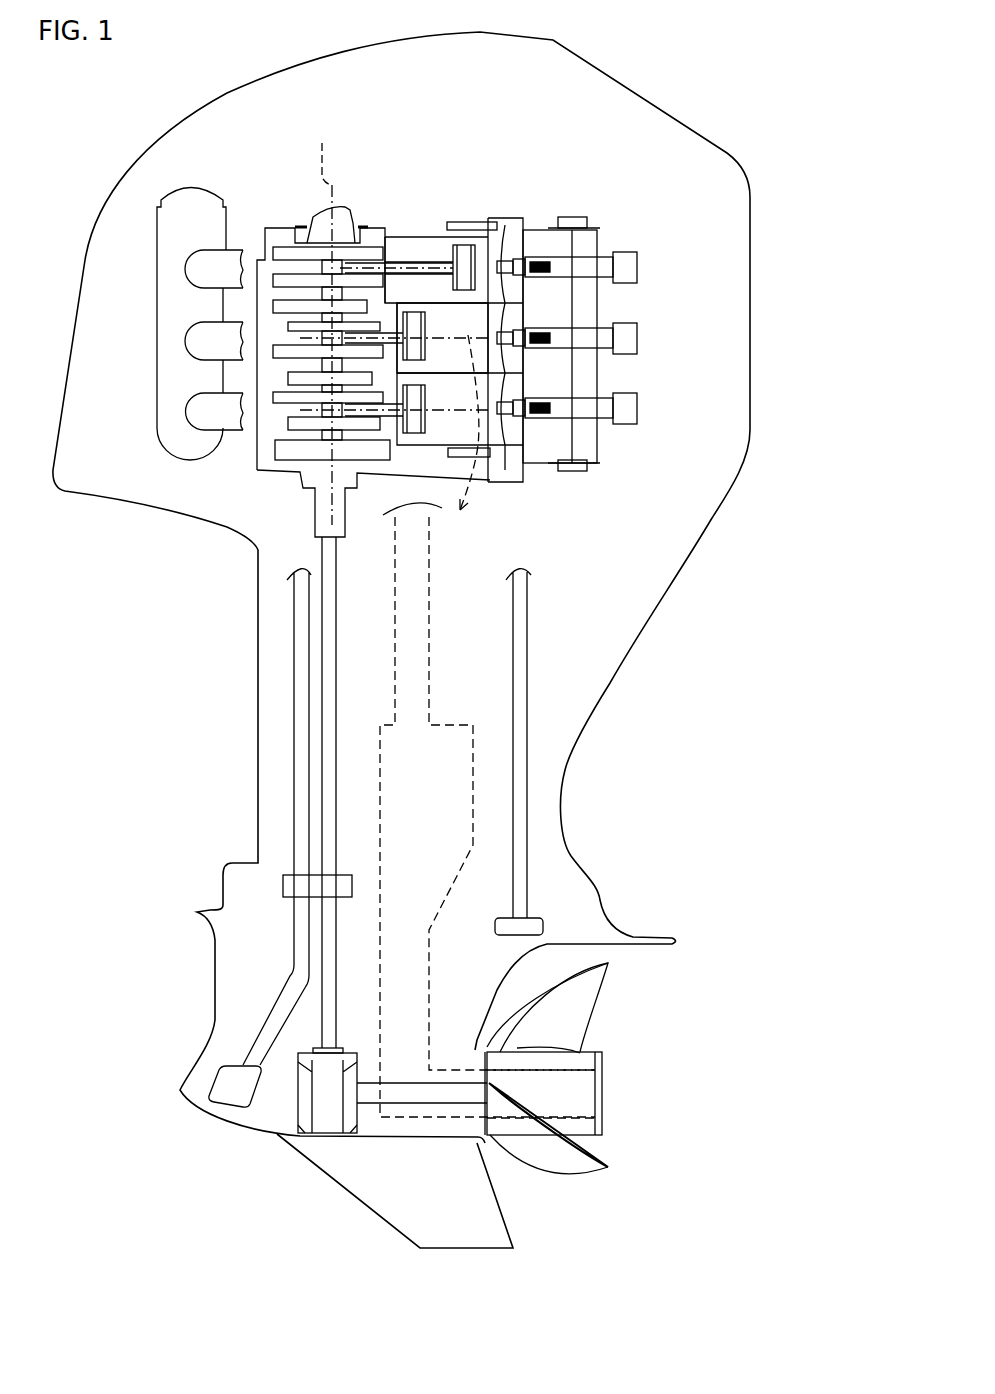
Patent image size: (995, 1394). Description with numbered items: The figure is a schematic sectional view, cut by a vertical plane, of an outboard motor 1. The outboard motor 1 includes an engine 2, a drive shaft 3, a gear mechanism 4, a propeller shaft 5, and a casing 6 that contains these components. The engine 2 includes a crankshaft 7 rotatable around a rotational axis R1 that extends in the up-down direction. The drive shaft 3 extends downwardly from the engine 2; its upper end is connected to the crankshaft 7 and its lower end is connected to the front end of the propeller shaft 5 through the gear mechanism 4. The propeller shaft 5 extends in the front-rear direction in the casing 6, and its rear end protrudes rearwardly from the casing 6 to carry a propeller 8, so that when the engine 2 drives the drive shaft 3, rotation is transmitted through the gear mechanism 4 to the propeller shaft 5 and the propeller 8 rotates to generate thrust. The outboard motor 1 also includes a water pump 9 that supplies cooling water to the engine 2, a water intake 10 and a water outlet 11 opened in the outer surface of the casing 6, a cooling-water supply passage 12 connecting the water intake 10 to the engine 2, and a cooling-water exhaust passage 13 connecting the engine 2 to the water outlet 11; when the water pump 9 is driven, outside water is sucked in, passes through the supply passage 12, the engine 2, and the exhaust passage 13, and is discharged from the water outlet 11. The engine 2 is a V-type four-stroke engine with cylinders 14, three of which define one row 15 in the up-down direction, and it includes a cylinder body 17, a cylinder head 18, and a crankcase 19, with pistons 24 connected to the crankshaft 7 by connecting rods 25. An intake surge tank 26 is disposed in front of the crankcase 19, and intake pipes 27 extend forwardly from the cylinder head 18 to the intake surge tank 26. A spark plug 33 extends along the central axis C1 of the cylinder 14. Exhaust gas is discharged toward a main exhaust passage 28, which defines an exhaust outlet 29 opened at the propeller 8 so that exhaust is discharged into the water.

The outboard motor 1 is at (120, 123).
The engine 2 is at (602, 185).
The drive shaft 3 is at (331, 633).
The gear mechanism 4 is at (295, 1092).
The propeller shaft 5 is at (443, 1093).
The casing 6 is at (638, 638).
The crankshaft 7 is at (308, 220).
The propeller 8 is at (580, 1012).
The water pump 9 is at (282, 887).
The water intake 10 is at (227, 1087).
The water outlet 11 is at (534, 928).
The cooling-water supply passage 12 is at (302, 750).
The cooling-water exhaust passage 13 is at (528, 785).
The cylinder 14 is at (512, 296).
The one row 15 is at (413, 170).
The cylinder body 17 is at (433, 233).
The cylinder head 18 is at (509, 222).
The crankcase 19 is at (377, 237).
The piston 24 is at (482, 247).
The connecting rod 25 is at (415, 250).
The intake surge tank 26 is at (157, 270).
The intake pipe 27 is at (198, 408).
The main exhaust passage 28 is at (438, 800).
The exhaust outlet 29 is at (603, 1093).
The spark plug 33 is at (513, 240).
The rotational axis R1 is at (317, 152).
The central axis C1 is at (466, 437).